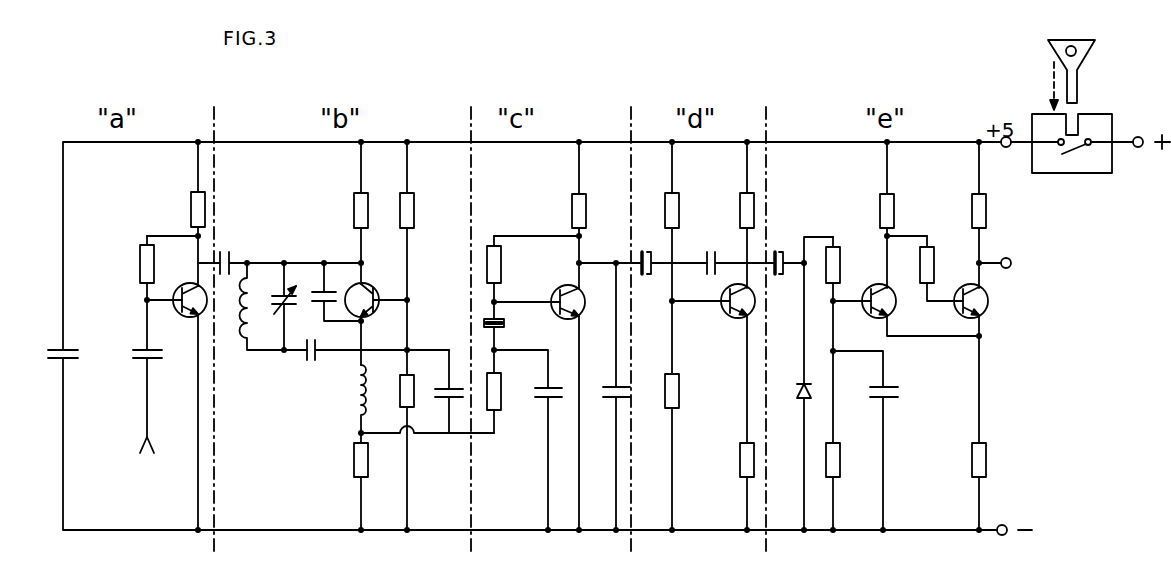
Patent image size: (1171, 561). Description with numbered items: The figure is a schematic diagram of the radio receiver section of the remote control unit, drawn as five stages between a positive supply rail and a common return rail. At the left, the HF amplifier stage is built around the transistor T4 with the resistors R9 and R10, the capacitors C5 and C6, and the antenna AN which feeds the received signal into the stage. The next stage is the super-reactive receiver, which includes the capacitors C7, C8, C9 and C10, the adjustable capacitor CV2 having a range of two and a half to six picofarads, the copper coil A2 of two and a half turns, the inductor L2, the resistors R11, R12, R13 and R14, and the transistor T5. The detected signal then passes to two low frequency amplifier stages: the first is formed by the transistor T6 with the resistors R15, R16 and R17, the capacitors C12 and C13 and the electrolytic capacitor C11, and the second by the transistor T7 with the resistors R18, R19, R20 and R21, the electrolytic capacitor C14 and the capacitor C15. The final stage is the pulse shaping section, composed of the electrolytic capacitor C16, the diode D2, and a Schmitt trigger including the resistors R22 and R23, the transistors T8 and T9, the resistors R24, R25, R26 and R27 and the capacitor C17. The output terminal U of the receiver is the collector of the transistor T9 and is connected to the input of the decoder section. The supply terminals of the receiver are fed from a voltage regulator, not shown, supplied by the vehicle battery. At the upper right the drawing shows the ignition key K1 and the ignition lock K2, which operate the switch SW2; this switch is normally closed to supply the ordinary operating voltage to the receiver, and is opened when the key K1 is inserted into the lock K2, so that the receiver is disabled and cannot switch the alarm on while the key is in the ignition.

The capacitor C5 is at (71, 339).
The capacitor C6 is at (156, 379).
The capacitor C7 is at (279, 253).
The capacitor C8 is at (329, 292).
The capacitor C9 is at (370, 363).
The capacitor C10 is at (440, 391).
The electrolytic capacitor C11 is at (517, 342).
The capacitor C12 is at (528, 440).
The capacitor C13 is at (607, 396).
The electrolytic capacitor C14 is at (670, 277).
The capacitor C15 is at (725, 274).
The electrolytic capacitor C16 is at (789, 252).
The capacitor C17 is at (888, 440).
The adjustable capacitor CV2 is at (273, 306).
The resistor R9 is at (139, 293).
The resistor R10 is at (171, 214).
The resistor R11 is at (336, 213).
The resistor R12 is at (342, 486).
The resistor R13 is at (393, 442).
The resistor R14 is at (426, 258).
The resistor R15 is at (514, 393).
The resistor R16 is at (523, 277).
The resistor R17 is at (568, 215).
The resistor R18 is at (697, 258).
The resistor R19 is at (693, 450).
The resistor R20 is at (728, 215).
The resistor R21 is at (728, 486).
The resistor R22 is at (854, 340).
The resistor R23 is at (854, 486).
The resistor R24 is at (881, 215).
The resistor R25 is at (954, 486).
The resistor R26 is at (947, 268).
The resistor R27 is at (957, 215).
The transistor T4 is at (187, 395).
The transistor T5 is at (376, 312).
The transistor T6 is at (566, 398).
The transistor T7 is at (729, 363).
The transistor T8 is at (910, 310).
The transistor T9 is at (960, 363).
The copper coil A2 is at (261, 306).
The inductor L2 is at (412, 404).
The diode D2 is at (803, 383).
The antenna AN is at (167, 450).
The output terminal U is at (1007, 265).
The ignition key K1 is at (1087, 75).
The ignition lock K2 is at (1085, 158).
The switch SW2 is at (1077, 155).